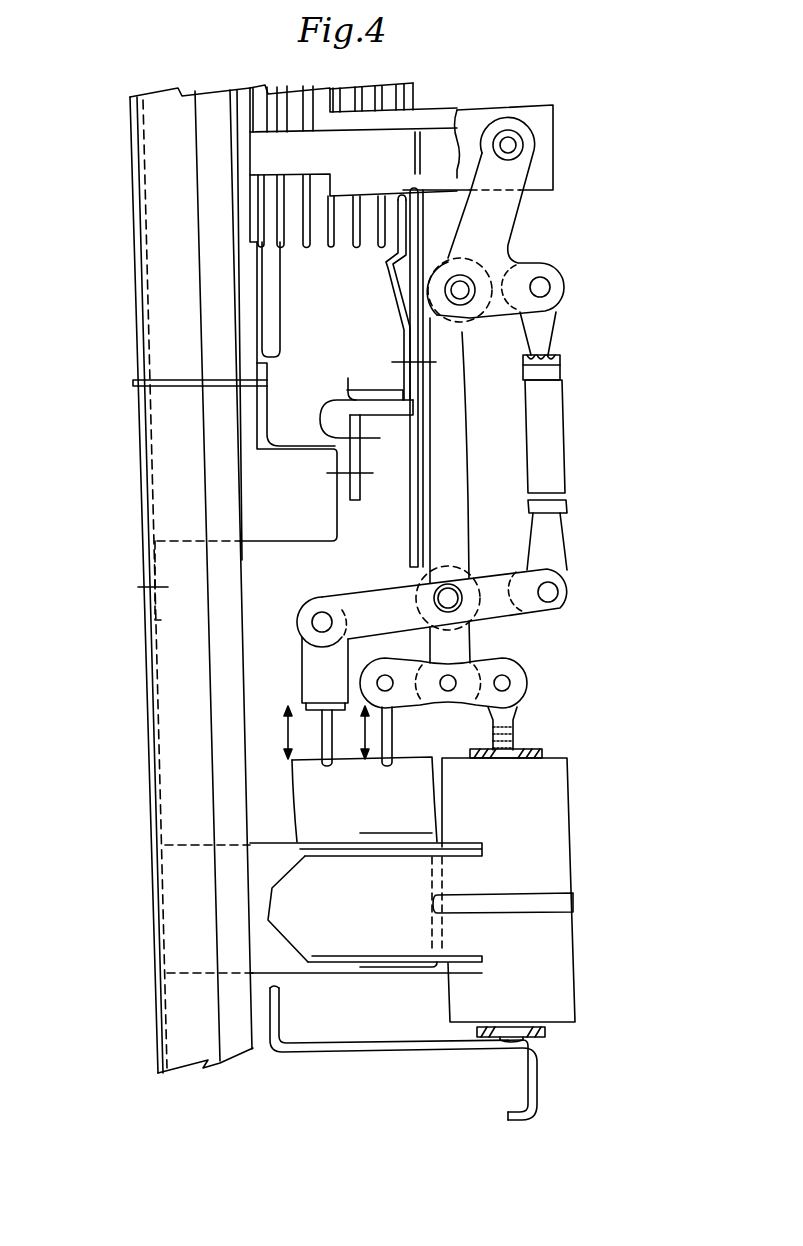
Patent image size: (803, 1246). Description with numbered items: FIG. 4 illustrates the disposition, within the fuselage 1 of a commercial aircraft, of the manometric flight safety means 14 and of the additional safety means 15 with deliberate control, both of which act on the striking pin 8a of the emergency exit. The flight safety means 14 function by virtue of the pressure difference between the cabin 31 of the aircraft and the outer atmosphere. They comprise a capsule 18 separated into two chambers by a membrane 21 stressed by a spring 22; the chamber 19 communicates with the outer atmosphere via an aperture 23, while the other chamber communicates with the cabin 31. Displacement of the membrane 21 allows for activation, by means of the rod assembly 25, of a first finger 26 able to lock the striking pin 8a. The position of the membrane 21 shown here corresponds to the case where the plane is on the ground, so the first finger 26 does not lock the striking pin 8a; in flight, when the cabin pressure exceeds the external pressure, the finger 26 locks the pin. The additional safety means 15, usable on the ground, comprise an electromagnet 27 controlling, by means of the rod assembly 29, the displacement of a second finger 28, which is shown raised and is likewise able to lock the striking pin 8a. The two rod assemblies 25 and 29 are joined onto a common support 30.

The fuselage 1 is at (143, 651).
The striking pin 8a is at (301, 792).
The flight safety means 14 is at (520, 78).
The additional safety means 15 is at (601, 762).
The capsule 18 is at (295, 452).
The chamber 19 is at (283, 400).
The membrane 21 is at (398, 287).
The spring 22 is at (312, 240).
The aperture 23 is at (136, 383).
The rod assembly 25 is at (583, 463).
The first finger 26 is at (323, 725).
The electromagnet 27 is at (570, 828).
The second finger 28 is at (395, 739).
The rod assembly 29 is at (530, 673).
The common support 30 is at (470, 481).
The cabin 31 is at (686, 510).